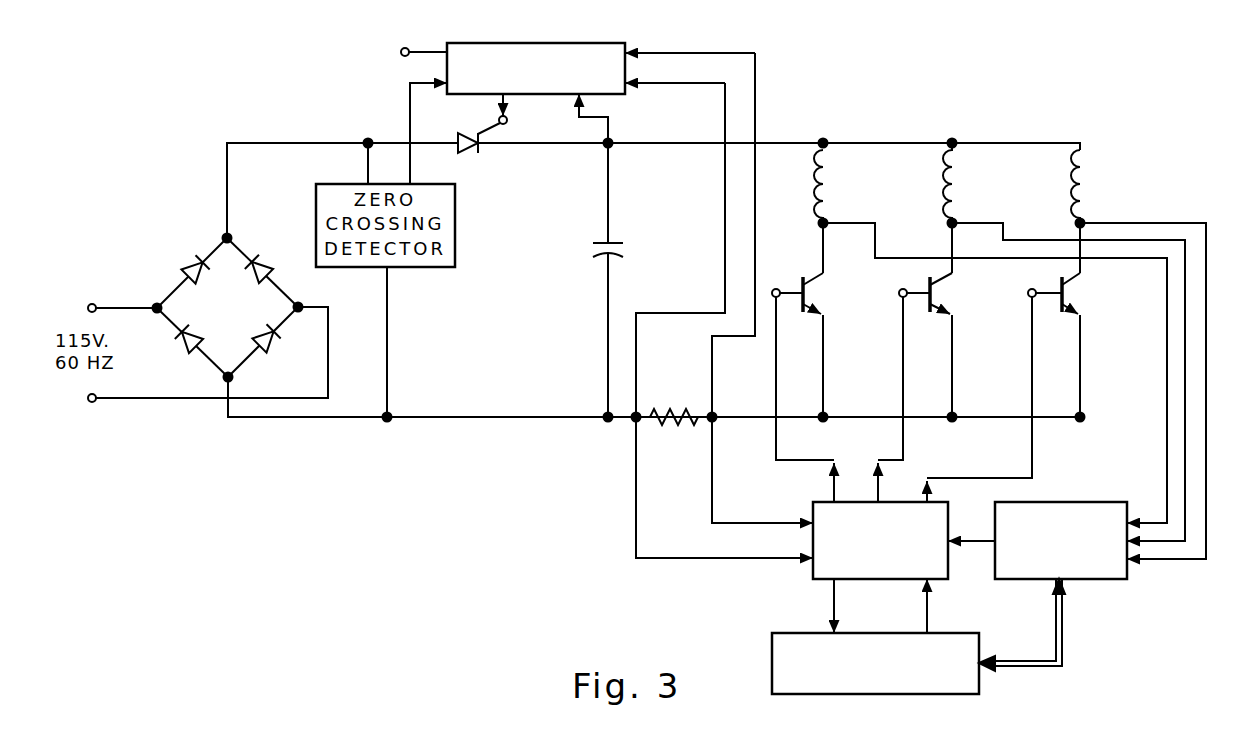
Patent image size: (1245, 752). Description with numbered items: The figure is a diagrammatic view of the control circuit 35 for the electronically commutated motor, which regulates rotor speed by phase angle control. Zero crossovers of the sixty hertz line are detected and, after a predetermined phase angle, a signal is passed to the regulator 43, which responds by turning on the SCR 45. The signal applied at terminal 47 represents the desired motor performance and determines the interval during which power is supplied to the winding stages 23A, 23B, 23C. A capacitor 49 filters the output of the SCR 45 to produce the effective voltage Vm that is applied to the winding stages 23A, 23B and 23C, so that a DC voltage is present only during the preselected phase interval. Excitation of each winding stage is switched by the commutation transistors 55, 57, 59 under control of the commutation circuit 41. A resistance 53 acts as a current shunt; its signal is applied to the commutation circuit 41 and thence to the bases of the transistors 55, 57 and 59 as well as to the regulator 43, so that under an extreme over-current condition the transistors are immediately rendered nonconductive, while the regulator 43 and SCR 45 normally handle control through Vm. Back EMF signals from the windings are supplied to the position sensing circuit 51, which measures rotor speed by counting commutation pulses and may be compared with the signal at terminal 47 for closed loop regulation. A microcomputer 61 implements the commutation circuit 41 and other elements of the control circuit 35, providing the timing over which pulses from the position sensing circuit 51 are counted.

The control circuit 35 is at (837, 74).
The regulator 43 is at (615, 44).
The terminal 47 is at (403, 48).
The SCR 45 is at (470, 156).
The capacitor 49 is at (592, 252).
The resistance 53 is at (673, 427).
The winding stage 23A is at (833, 179).
The winding stage 23B is at (961, 179).
The winding stage 23C is at (1089, 179).
The commutation transistor 55 is at (815, 297).
The commutation transistor 57 is at (942, 297).
The commutation transistor 59 is at (1073, 297).
The commutation circuit 41 is at (897, 582).
The position sensing circuit 51 is at (1104, 581).
The microcomputer 61 is at (982, 680).